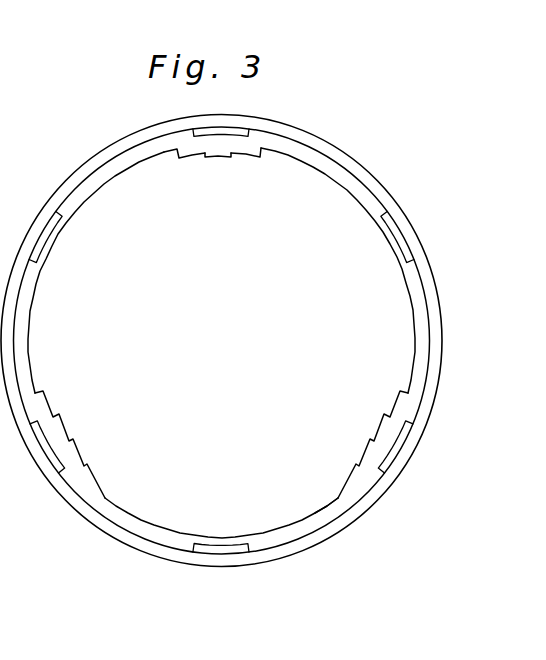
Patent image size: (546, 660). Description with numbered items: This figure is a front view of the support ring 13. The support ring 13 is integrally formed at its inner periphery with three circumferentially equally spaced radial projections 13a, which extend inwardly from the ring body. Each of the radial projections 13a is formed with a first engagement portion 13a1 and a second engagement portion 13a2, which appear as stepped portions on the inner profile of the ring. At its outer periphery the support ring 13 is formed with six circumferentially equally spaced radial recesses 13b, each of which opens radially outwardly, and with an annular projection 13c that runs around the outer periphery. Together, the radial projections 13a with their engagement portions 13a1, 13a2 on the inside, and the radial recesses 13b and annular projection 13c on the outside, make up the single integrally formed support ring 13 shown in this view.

The support ring 13 is at (373, 170).
The radial projections 13a is at (59, 435).
The first engagement portion 13a1 is at (176, 151).
The second engagement portion 13a2 is at (221, 158).
The radial recesses 13b is at (222, 553).
The annular projection 13c is at (329, 531).